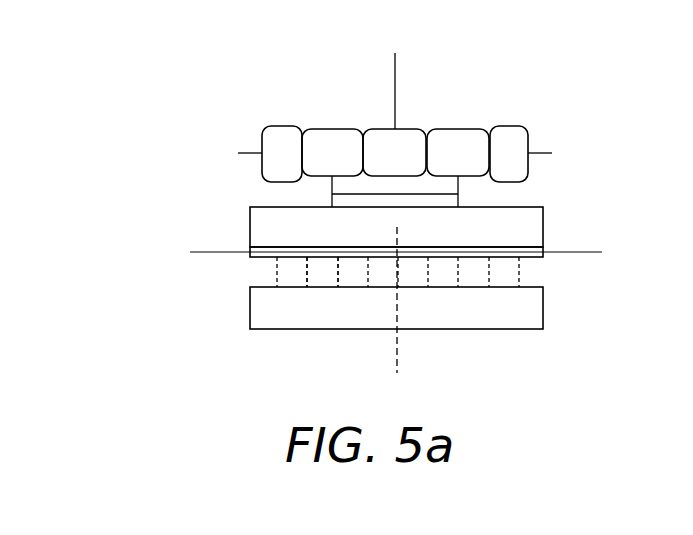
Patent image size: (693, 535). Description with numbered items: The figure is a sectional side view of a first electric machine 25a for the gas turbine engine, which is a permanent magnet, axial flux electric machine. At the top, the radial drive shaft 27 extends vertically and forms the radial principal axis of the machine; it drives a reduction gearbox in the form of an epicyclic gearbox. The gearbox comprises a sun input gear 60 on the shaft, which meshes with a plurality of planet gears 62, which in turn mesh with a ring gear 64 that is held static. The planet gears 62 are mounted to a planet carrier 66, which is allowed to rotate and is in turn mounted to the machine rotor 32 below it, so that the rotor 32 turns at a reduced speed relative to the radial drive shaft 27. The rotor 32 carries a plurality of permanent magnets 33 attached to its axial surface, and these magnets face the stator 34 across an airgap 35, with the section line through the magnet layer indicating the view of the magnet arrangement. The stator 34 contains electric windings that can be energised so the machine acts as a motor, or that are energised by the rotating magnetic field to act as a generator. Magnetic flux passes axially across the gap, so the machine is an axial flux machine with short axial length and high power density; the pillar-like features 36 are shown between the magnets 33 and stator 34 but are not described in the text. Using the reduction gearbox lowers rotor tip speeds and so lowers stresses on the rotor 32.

The first electric machine 25a is at (193, 201).
The radial drive shaft 27 is at (395, 97).
The machine rotor 32 is at (543, 220).
The permanent magnets 33 is at (543, 255).
The stator 34 is at (543, 308).
The airgap 35 is at (327, 276).
The pillar 36 is at (277, 270).
The sun input gear 60 is at (394, 127).
The planet gears 62 is at (333, 129).
The ring gear 64 is at (507, 127).
The planet carrier 66 is at (458, 185).